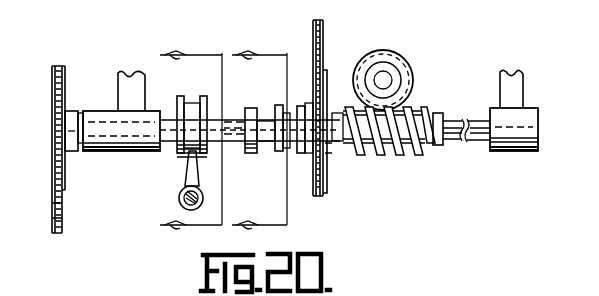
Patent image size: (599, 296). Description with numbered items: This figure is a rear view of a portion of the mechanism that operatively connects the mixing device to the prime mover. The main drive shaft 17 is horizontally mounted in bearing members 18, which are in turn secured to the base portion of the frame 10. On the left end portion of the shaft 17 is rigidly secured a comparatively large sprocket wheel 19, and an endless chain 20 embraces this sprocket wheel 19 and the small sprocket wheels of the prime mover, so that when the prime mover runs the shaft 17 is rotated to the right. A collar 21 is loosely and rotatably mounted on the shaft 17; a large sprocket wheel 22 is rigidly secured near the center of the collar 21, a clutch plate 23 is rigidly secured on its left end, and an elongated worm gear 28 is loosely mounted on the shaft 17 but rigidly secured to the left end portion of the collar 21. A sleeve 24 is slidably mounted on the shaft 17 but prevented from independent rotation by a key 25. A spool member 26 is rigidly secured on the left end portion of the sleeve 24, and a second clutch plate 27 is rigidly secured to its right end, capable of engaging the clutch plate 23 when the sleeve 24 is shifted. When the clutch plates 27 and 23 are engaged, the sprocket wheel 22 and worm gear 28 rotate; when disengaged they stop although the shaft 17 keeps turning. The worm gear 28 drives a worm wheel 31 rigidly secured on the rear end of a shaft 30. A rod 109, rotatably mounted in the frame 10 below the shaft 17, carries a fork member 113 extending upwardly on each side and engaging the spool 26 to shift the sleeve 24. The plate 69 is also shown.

The base portion of the frame 10 is at (126, 77).
The main drive shaft 17 is at (80, 113).
The bearing members 18 is at (120, 148).
The sprocket wheel 19 is at (52, 90).
The endless chain 20 is at (62, 207).
The collar 21 is at (339, 164).
The sprocket wheel 22 is at (335, 184).
The clutch plate 23 is at (278, 104).
The sleeve 24 is at (238, 150).
The key 25 is at (230, 117).
The spool member 26 is at (190, 100).
The second clutch plate 27 is at (256, 150).
The worm gear 28 is at (424, 112).
The shaft 30 is at (386, 70).
The worm wheel 31 is at (408, 88).
The vertical plate 69 is at (325, 52).
The rod 109 is at (180, 198).
The fork member 113 is at (186, 177).